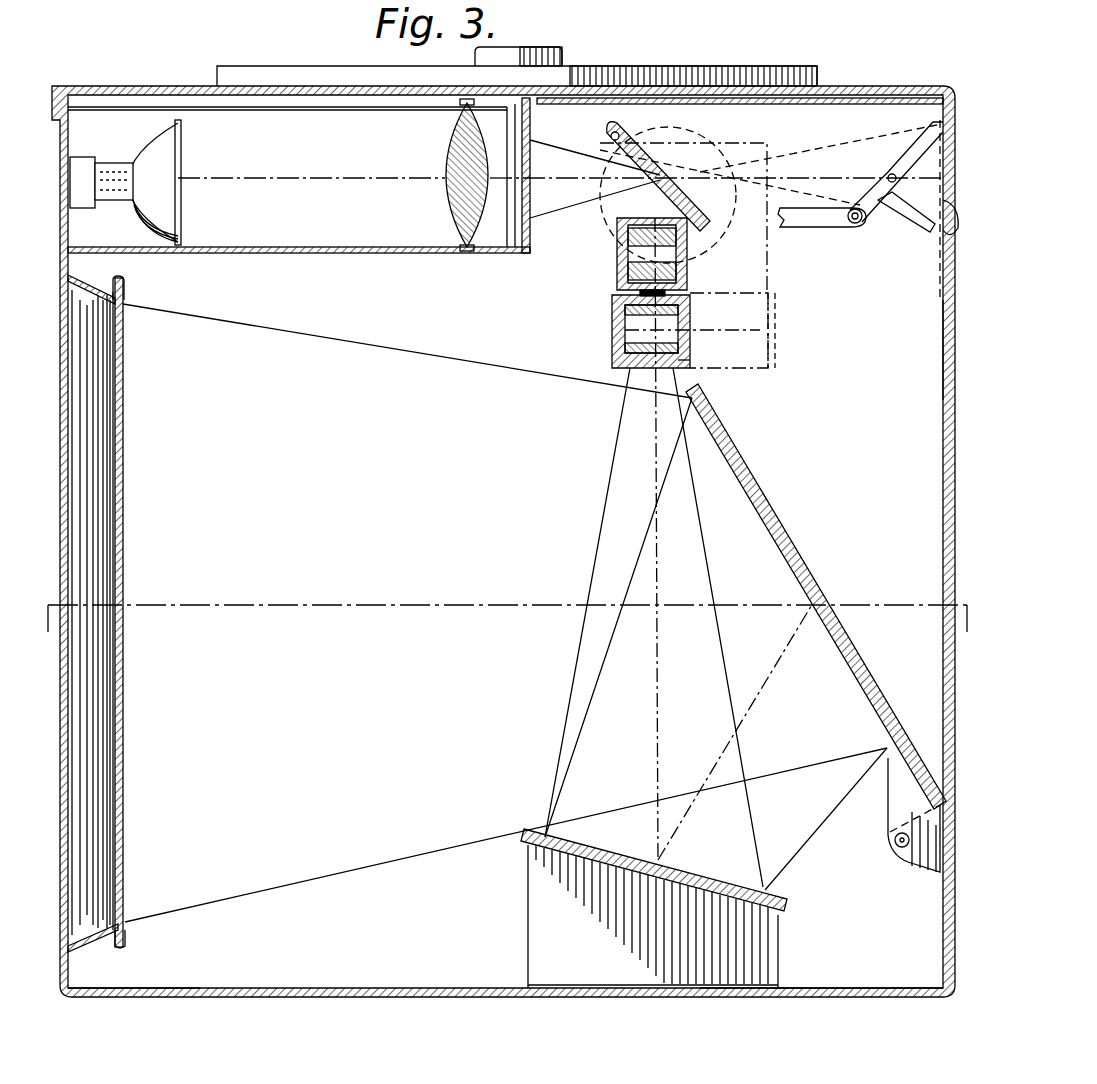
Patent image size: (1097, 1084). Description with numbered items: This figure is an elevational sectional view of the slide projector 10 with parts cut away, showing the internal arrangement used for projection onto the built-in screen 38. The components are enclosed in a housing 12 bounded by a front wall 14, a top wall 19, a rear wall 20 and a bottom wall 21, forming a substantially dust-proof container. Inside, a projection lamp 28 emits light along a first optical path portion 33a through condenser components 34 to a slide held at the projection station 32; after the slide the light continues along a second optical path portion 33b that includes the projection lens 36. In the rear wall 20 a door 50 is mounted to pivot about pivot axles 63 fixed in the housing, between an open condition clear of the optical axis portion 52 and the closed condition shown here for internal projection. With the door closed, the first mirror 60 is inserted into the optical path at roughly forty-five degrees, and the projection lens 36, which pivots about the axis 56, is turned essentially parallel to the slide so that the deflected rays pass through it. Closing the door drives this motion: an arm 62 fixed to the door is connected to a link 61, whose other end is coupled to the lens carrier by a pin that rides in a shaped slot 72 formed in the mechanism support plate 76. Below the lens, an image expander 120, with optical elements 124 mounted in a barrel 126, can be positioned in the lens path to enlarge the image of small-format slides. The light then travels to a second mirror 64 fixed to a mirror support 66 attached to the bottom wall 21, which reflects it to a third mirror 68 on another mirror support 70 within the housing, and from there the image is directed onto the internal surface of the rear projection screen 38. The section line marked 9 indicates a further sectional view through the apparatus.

The section line 9- 9 is at (505, 634).
The slide projector 10 is at (186, 74).
The housing 12 is at (132, 86).
The front wall 14 is at (78, 972).
The top wall 19 is at (902, 86).
The rear wall 20 is at (943, 345).
The bottom wall 21 is at (826, 988).
The projection lamp 28 is at (182, 166).
The projection station 32 is at (538, 212).
The first optical path portion 33a is at (290, 178).
The second optical path portion 33b is at (572, 178).
The condenser components 34 is at (447, 212).
The projection lens 36 is at (610, 258).
The built-in screen 38 is at (125, 452).
The door 50 is at (945, 228).
The optical axis portion 52 is at (838, 172).
The axis 56 is at (618, 186).
The first mirror 60 is at (664, 180).
The link 61 is at (832, 228).
The arm 62 is at (867, 212).
The pivot axles 63 is at (893, 173).
The second mirror 64 is at (688, 862).
The mirror support 66 is at (548, 910).
The third mirror 68 is at (846, 690).
The mirror support 70 is at (870, 698).
The shaped slot 72 is at (700, 258).
The mechanism support plate 76 is at (770, 268).
The image expander 120 is at (610, 328).
The optical elements 124 is at (690, 315).
The barrel 126 is at (690, 362).